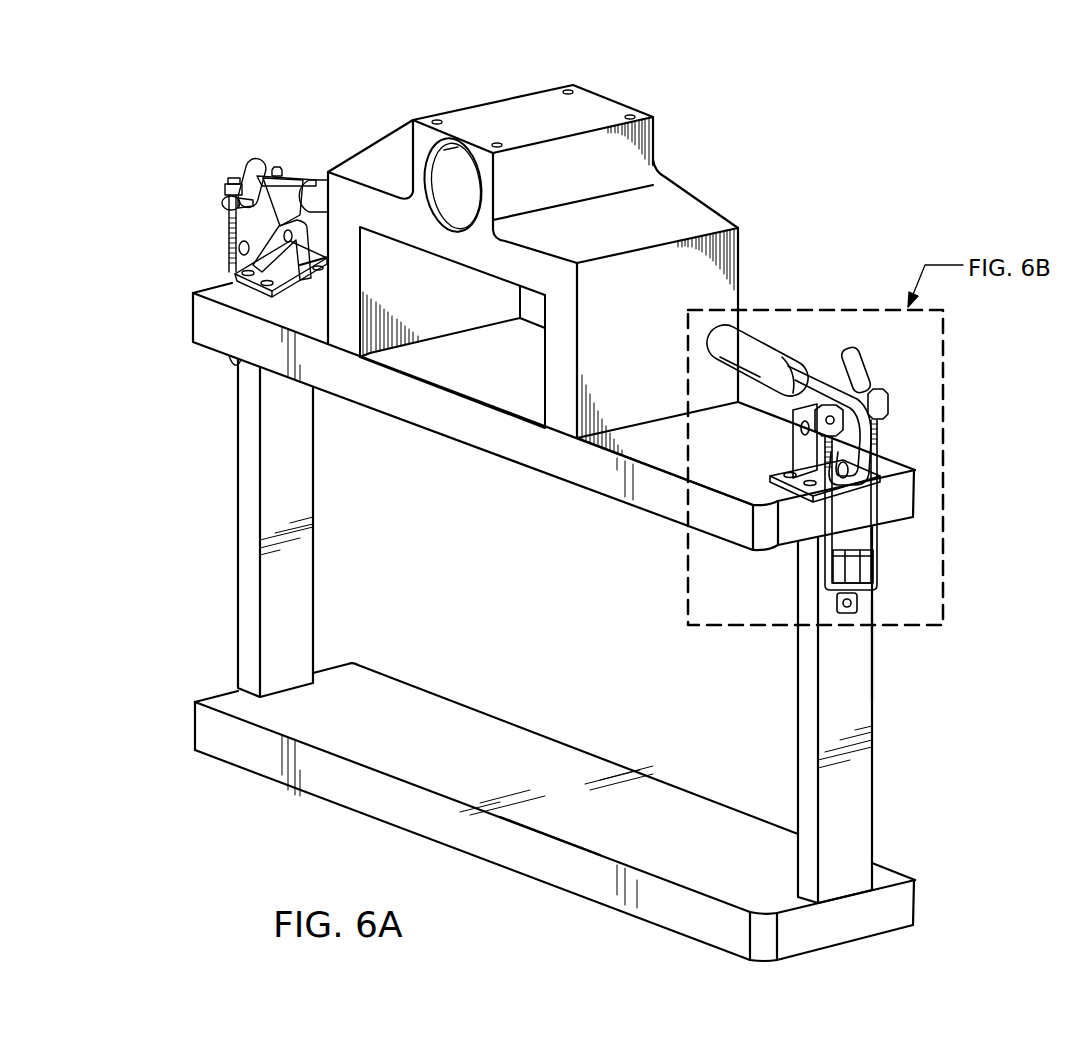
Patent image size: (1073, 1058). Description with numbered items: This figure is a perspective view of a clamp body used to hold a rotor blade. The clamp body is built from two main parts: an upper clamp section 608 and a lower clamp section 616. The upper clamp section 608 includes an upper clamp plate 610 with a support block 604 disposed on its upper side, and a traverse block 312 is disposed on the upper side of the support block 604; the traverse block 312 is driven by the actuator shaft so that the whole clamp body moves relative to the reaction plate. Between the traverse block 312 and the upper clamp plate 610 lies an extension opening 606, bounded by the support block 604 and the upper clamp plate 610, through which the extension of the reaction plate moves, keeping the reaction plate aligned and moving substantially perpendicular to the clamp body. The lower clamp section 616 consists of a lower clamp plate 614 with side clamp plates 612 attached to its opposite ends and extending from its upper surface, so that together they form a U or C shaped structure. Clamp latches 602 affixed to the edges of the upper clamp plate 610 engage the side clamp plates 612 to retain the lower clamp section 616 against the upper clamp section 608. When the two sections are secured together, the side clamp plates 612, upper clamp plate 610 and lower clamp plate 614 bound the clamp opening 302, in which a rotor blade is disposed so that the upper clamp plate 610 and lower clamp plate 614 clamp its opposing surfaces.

The clamp opening 302 is at (413, 760).
The traverse block 312 is at (607, 106).
The clamp latches 602 is at (280, 170).
The support block 604 is at (690, 222).
The extension opening 606 is at (462, 372).
The upper clamp section 608 is at (178, 83).
The upper clamp plate 610 is at (473, 449).
The side clamp plates 612 is at (248, 520).
The lower clamp plate 614 is at (497, 864).
The lower clamp section 616 is at (967, 533).